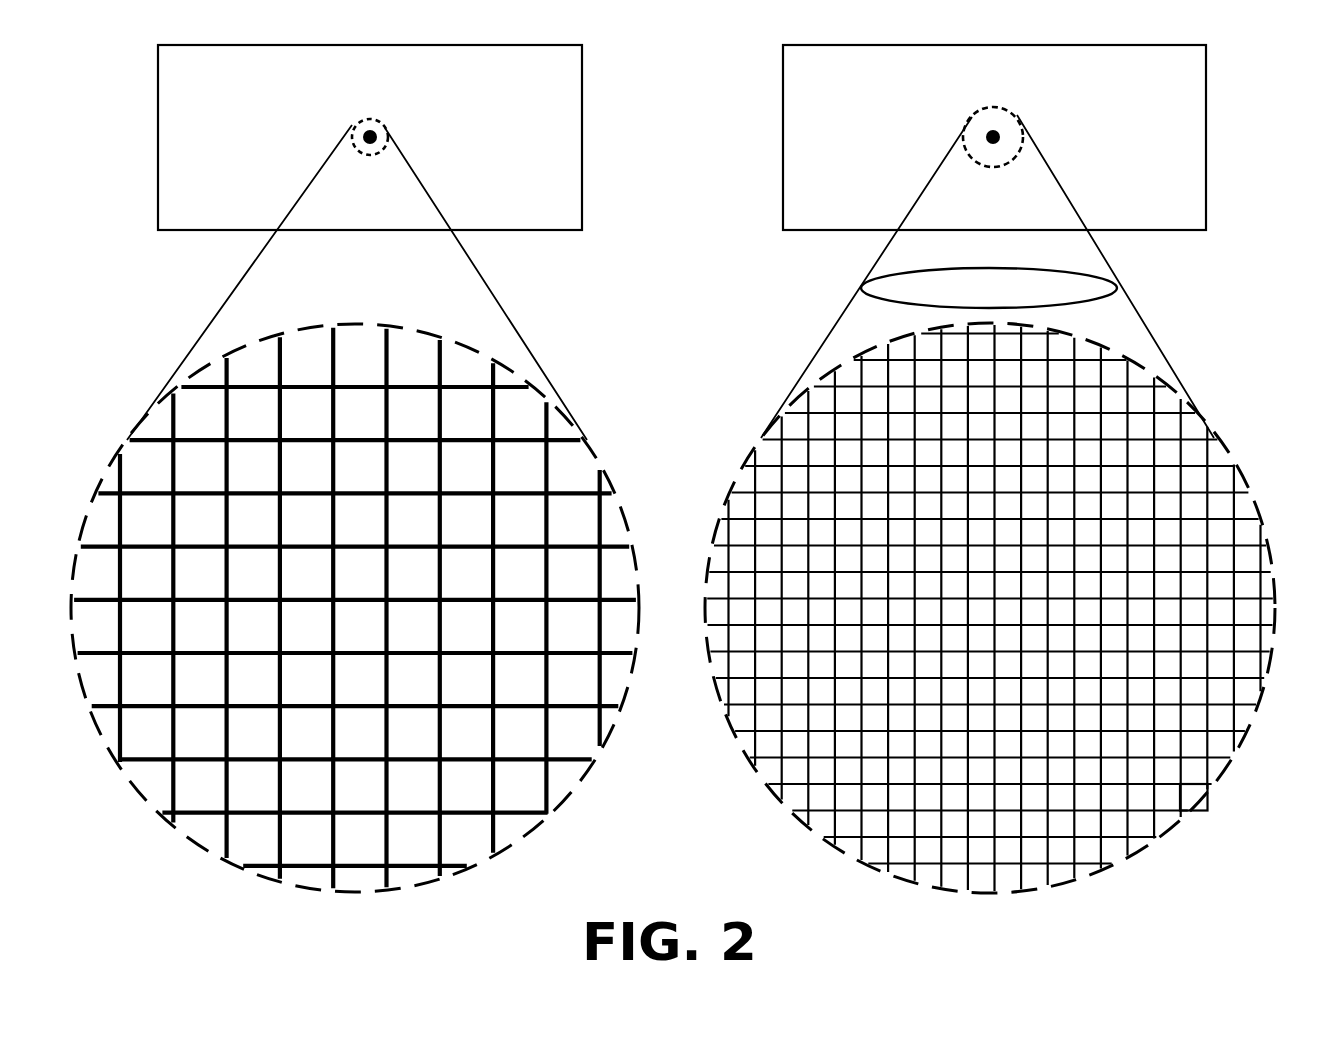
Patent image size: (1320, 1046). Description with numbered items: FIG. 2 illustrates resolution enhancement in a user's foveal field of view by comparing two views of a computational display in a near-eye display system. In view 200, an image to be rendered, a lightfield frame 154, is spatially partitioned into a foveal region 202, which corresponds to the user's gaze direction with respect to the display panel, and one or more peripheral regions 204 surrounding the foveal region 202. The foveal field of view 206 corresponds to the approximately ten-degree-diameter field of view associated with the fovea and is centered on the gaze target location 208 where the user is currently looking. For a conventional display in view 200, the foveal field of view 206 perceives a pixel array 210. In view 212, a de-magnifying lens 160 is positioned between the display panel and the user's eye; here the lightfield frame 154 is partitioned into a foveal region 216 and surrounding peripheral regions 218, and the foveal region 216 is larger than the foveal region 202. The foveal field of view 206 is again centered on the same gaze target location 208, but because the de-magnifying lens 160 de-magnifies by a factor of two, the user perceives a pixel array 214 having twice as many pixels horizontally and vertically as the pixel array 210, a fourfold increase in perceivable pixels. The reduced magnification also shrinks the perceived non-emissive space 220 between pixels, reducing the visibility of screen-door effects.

The view 200 is at (108, 76).
The lightfield frame 154 is at (158, 230).
The foveal region 202 is at (382, 122).
The peripheral region 204 is at (560, 224).
The foveal field of view 206 is at (207, 848).
The gaze target location 208 is at (356, 126).
The pixel array 210 is at (104, 667).
The view 212 is at (1234, 76).
The pixel array 214 is at (736, 667).
The foveal region 216 is at (1017, 119).
The peripheral region 218 is at (1185, 224).
The non-emissive space 220 is at (1178, 797).
The de-magnifying lens 160 is at (1105, 291).